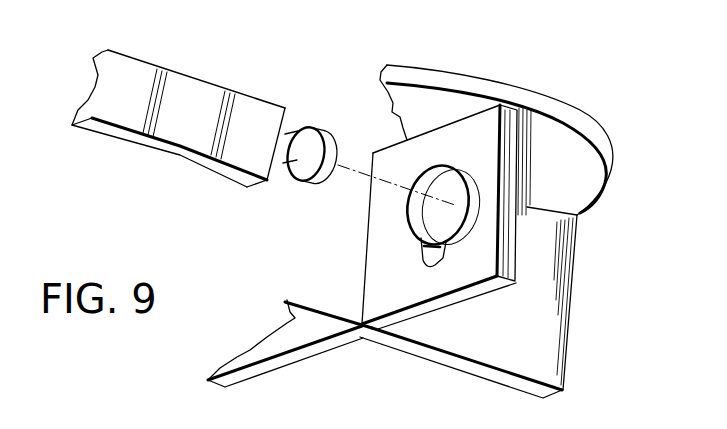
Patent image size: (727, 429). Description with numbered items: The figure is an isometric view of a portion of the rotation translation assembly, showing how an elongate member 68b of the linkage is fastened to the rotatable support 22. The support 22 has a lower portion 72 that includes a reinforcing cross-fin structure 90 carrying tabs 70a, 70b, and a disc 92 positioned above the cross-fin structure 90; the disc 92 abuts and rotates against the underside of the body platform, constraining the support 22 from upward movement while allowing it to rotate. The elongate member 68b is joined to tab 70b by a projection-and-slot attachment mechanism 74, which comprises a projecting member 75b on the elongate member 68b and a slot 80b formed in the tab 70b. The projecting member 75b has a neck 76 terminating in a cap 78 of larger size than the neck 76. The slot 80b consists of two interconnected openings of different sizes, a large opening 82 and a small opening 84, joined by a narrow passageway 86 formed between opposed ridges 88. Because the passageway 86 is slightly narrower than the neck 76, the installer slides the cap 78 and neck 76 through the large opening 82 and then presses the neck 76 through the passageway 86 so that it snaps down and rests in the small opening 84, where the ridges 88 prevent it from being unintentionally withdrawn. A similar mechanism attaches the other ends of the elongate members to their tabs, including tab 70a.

The rotatable support 22 is at (648, 122).
The second elongate member 68b is at (153, 63).
The tab 70a is at (265, 367).
The tab 70b is at (438, 305).
The lower portion 72 is at (585, 292).
The projection-and-slot attachment mechanism 74 is at (357, 115).
The projecting member 75b is at (305, 108).
The neck 76 is at (287, 167).
The cap 78 is at (312, 178).
The slot 80b is at (473, 163).
The large opening 82 is at (440, 187).
The small opening 84 is at (440, 256).
The narrow passageway 86 is at (440, 220).
The ridges 88 is at (421, 254).
The reinforcing cross-fin structure 90 is at (438, 366).
The disc 92 is at (583, 118).